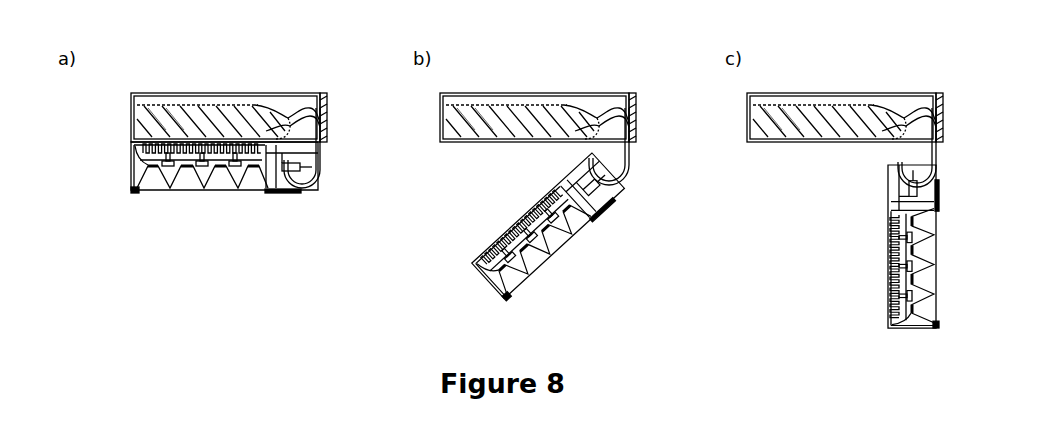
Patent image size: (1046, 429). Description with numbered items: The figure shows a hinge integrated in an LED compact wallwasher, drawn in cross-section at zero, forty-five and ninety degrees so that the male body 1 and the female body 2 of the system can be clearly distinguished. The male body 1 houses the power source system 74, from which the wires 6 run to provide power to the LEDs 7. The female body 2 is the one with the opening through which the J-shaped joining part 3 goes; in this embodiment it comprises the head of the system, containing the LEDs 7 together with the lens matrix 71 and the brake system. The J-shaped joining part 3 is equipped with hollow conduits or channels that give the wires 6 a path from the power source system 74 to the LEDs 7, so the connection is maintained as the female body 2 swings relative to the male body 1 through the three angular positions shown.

The male body 1 is at (124, 102).
The female body 2 is at (124, 171).
The J-shaped joining part 3 is at (325, 178).
The wires 6 is at (293, 107).
The LEDs 7 is at (187, 171).
The lens matrix 71 is at (243, 181).
The power source system 74 is at (204, 108).